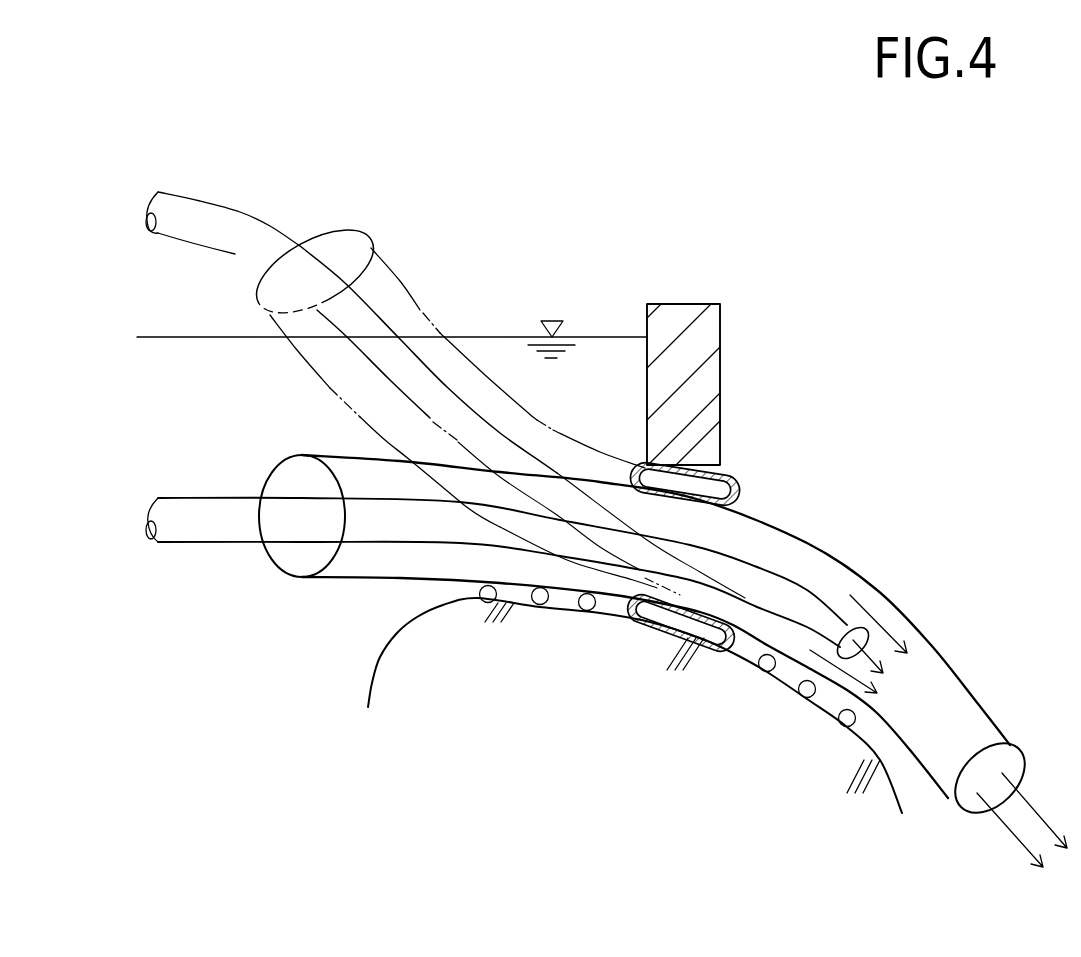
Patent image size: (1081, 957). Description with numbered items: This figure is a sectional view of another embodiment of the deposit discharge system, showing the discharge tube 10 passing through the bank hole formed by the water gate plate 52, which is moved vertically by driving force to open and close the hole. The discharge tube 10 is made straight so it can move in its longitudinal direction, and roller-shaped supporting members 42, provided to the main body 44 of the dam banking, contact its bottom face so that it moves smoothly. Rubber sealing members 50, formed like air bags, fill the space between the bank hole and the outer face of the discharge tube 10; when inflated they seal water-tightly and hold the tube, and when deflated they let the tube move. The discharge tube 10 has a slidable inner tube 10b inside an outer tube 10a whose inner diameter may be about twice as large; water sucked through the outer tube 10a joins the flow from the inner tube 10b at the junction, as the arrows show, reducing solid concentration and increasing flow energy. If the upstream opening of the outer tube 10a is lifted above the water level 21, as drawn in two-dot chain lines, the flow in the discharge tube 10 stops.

The discharge tube 10 is at (320, 603).
The outer tube 10a is at (810, 540).
The inner tube 10b is at (202, 543).
The water level 21 is at (506, 337).
The roller-shaped supporting members 42 is at (540, 605).
The main body 44 is at (375, 684).
The sealing member 50 is at (740, 473).
The water gate plate 52 is at (686, 320).